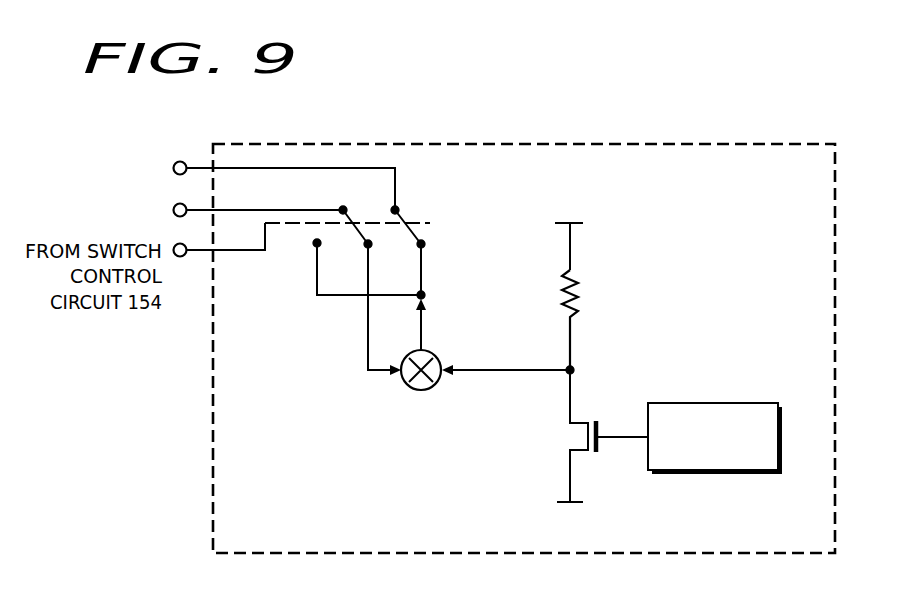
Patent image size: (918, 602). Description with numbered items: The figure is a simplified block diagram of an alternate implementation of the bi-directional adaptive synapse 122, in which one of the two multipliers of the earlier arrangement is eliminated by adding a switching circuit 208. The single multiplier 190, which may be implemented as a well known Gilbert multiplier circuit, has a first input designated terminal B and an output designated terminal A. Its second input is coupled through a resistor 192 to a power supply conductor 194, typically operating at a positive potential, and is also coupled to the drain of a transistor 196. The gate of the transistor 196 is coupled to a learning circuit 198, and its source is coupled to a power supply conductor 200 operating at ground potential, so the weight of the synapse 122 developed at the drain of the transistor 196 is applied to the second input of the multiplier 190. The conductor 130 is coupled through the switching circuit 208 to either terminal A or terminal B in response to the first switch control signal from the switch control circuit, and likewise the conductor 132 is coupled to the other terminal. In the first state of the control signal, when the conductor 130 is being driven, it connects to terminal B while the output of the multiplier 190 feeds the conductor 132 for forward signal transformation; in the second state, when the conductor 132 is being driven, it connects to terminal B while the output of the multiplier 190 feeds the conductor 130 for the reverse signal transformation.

The synapse 122 is at (768, 143).
The conductor 130 is at (173, 168).
The conductor 132 is at (173, 210).
The switching circuit 208 is at (456, 217).
The multiplier 190 is at (422, 393).
The power supply conductor 194 is at (577, 223).
The resistor 192 is at (578, 290).
The transistor 196 is at (568, 435).
The power supply conductor 200 is at (562, 503).
The learning circuit 198 is at (737, 475).